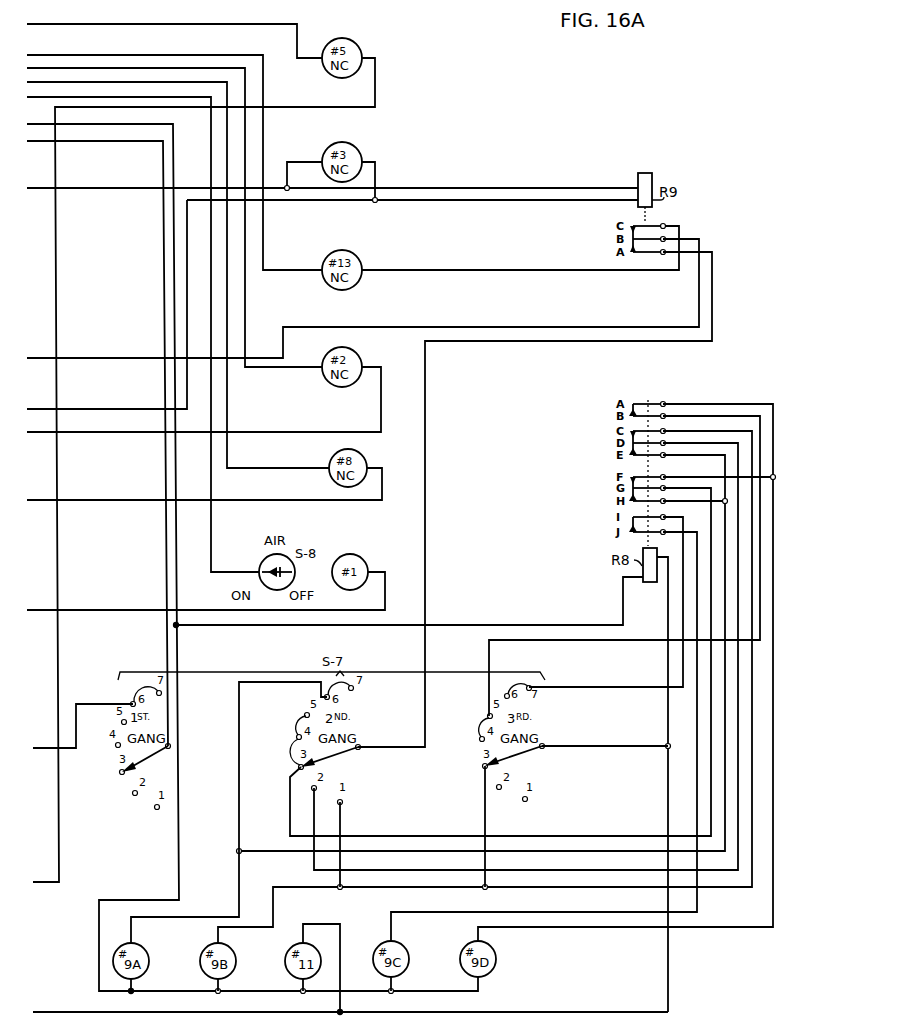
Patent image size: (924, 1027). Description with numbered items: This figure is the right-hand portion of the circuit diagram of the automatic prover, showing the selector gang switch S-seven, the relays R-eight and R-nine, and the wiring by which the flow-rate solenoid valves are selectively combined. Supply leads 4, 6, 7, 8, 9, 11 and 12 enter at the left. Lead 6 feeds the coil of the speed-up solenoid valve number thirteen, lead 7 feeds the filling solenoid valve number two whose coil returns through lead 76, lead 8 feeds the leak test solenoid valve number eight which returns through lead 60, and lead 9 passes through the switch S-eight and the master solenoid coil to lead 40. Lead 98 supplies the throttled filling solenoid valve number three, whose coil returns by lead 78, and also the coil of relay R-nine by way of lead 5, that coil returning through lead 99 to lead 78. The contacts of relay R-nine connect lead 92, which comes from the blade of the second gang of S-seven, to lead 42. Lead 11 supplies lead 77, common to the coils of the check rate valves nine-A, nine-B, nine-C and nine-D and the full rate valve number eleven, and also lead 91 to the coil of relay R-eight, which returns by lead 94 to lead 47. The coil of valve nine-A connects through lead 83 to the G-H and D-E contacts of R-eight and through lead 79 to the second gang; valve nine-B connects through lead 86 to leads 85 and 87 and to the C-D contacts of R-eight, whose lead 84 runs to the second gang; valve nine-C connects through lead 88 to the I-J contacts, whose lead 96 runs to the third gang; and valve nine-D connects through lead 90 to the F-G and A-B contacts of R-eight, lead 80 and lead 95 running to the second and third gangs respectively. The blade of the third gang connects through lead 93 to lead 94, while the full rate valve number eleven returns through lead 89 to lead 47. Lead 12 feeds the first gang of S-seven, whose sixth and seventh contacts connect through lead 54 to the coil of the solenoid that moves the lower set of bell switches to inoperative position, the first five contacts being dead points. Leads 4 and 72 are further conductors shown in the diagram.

The conductor 4 is at (52, 23).
The lead 6 is at (51, 55).
The lead 7 is at (51, 69).
The lead 8 is at (51, 83).
The lead 9 is at (51, 98).
The lead 11 is at (51, 125).
The lead 12 is at (52, 142).
The lead 98 is at (52, 189).
The lead 5 is at (437, 185).
The lead 99 is at (440, 204).
The lead 78 is at (55, 410).
The lead 42 is at (363, 299).
The lead 76 is at (55, 433).
The lead 60 is at (204, 484).
The lead 40 is at (54, 611).
The lead 92 is at (713, 293).
The lead 91 is at (460, 621).
The lead 94 is at (667, 778).
The lead 47 is at (60, 1011).
The lead 93 is at (622, 746).
The lead 90 is at (771, 407).
The lead 95 is at (762, 433).
The lead 86 is at (750, 452).
The lead 84 is at (738, 464).
The lead 83 is at (725, 486).
The lead 80 is at (710, 513).
The lead 96 is at (683, 600).
The lead 88 is at (697, 616).
The lead 79 is at (237, 752).
The lead 54 is at (55, 749).
The lead 85 is at (340, 820).
The lead 87 is at (485, 820).
The lead 89 is at (340, 943).
The conductor 72 is at (57, 882).
The lead 77 is at (275, 982).